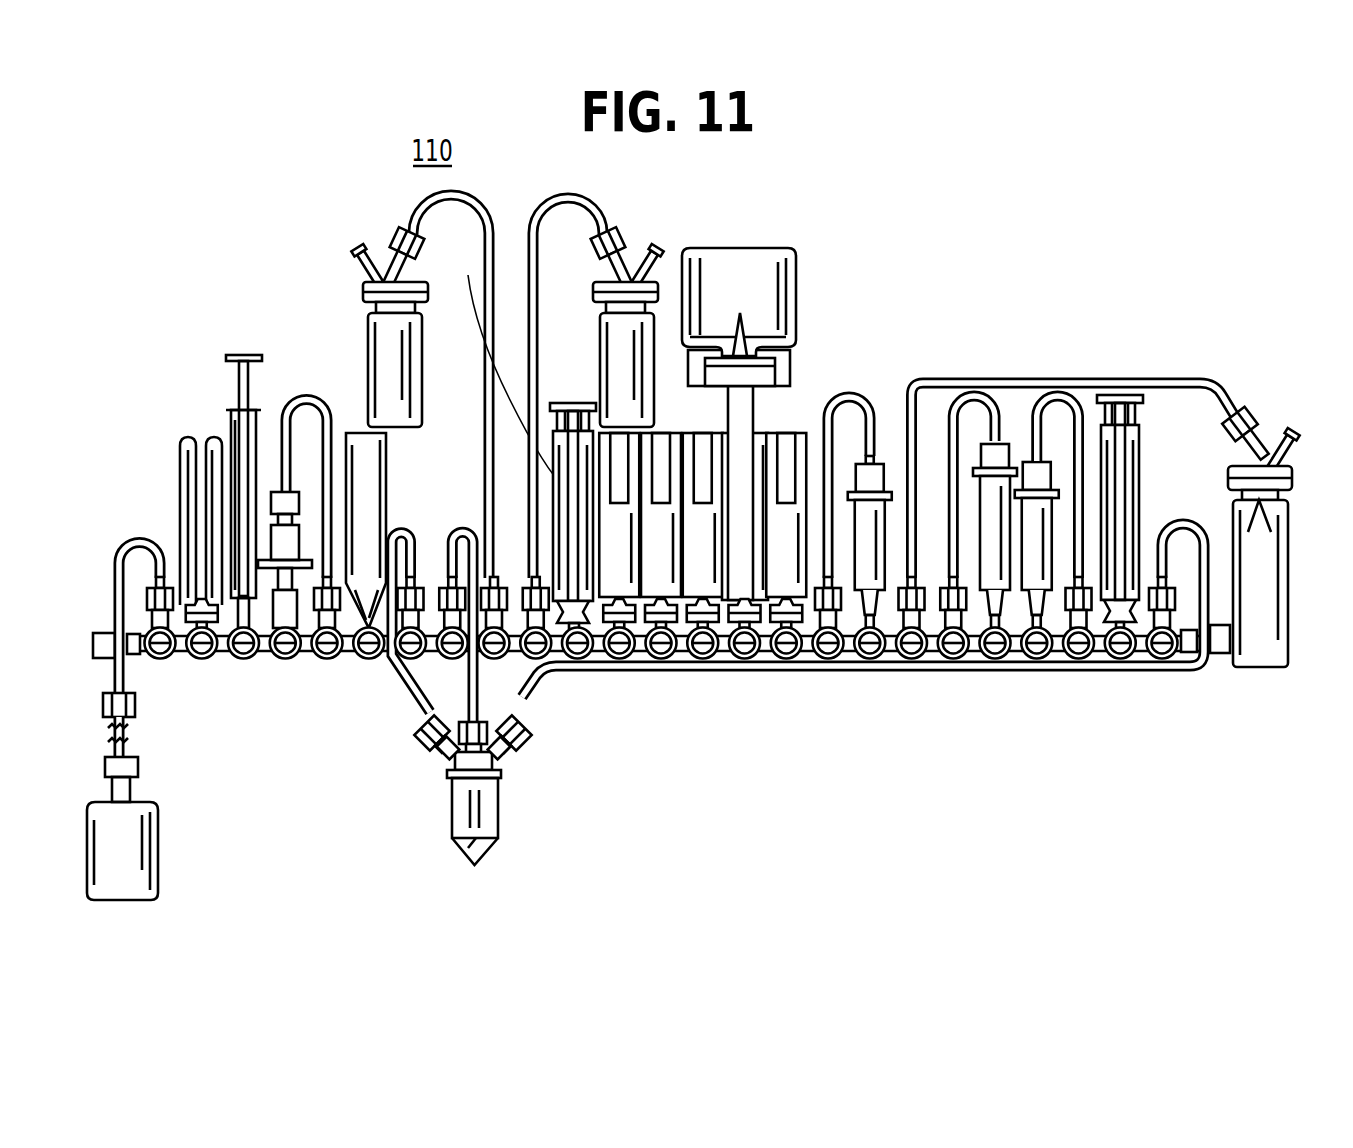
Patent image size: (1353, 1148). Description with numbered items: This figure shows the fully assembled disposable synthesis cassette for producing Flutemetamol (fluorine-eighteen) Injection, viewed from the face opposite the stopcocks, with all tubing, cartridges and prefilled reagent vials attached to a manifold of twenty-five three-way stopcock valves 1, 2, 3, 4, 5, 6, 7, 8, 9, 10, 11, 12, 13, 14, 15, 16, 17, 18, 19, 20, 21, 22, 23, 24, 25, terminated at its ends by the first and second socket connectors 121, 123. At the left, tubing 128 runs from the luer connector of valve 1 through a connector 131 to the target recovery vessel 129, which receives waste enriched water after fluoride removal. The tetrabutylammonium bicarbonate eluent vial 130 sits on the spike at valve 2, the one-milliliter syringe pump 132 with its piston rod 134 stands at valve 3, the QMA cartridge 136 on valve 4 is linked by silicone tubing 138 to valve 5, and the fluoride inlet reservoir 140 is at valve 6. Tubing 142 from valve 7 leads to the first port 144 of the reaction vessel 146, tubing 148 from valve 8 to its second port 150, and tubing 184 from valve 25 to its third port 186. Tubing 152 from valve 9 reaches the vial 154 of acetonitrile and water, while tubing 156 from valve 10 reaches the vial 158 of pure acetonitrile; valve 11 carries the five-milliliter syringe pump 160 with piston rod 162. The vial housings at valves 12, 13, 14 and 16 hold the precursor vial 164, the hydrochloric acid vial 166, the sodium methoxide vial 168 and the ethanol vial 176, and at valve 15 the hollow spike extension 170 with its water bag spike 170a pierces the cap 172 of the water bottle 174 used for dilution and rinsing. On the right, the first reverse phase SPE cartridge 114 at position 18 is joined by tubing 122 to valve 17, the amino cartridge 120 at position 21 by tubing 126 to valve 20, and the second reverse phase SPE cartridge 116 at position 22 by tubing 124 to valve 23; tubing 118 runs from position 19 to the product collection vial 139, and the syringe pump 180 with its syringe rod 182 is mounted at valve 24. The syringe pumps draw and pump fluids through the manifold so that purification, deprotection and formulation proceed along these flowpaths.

The first reverse phase SPE cartridge 114 is at (868, 525).
The second reverse phase SPE cartridge 116 is at (1040, 560).
The Tygon tubing 118 is at (1046, 400).
The normal phase (amino) SPE cartridge 120 is at (996, 604).
The first socket connector 121 is at (132, 630).
The tubing 122 is at (856, 400).
The second socket connector 123 is at (1190, 660).
The tubing 124 is at (1020, 400).
The tubing 126 is at (977, 392).
The tubing 128 is at (127, 546).
The target recovery vessel 129 is at (158, 826).
The tetrabutylammonium bicarbonate eluent vial 130 is at (183, 528).
The connector 131 is at (128, 738).
The syringe pump 132 is at (232, 415).
The piston rod 134 is at (230, 376).
The QMA cartridge 136 is at (306, 520).
The silicone tubing 138 is at (318, 408).
The product collection vial 139 is at (1289, 570).
The fluoride inlet reservoir 140 is at (388, 486).
The tubing 142 is at (400, 712).
The first port 144 is at (430, 752).
The reaction vessel 146 is at (452, 830).
The tubing 148 is at (463, 532).
The second port 150 is at (452, 772).
The tubing 152 is at (484, 432).
The vial 154 is at (420, 375).
The tubing 156 is at (533, 240).
The vial 158 is at (604, 322).
The syringe pump 160 is at (498, 365).
The piston rod 162 is at (550, 412).
The vial 164 is at (621, 606).
The vial 166 is at (661, 606).
The vial 168 is at (703, 606).
The hollow spike extension 170 is at (754, 404).
The water bag spike 170a is at (742, 325).
The cap 172 is at (700, 378).
The water bottle 174 is at (752, 250).
The vial 176 is at (787, 606).
The syringe pump 180 is at (1136, 446).
The syringe rod 182 is at (1120, 395).
The tubing 184 is at (1184, 528).
The third port 186 is at (522, 756).
The manifold valve 1 is at (160, 659).
The manifold valve 2 is at (202, 659).
The manifold valve 3 is at (244, 659).
The manifold valve 4 is at (285, 659).
The manifold valve 5 is at (327, 659).
The manifold valve 6 is at (369, 659).
The manifold valve 7 is at (408, 659).
The manifold valve 8 is at (452, 659).
The manifold valve 9 is at (494, 659).
The manifold valve 10 is at (540, 659).
The manifold valve 11 is at (580, 659).
The manifold valve 12 is at (620, 659).
The manifold valve 13 is at (661, 659).
The manifold valve 14 is at (703, 659).
The manifold valve 15 is at (745, 659).
The manifold valve 16 is at (786, 659).
The manifold valve 17 is at (828, 659).
The manifold valve 18 is at (870, 659).
The manifold valve 19 is at (911, 659).
The manifold valve 20 is at (953, 659).
The manifold valve 21 is at (995, 659).
The manifold valve 22 is at (1037, 659).
The manifold valve 23 is at (1079, 659).
The manifold valve 24 is at (1120, 659).
The manifold valve 25 is at (1162, 659).